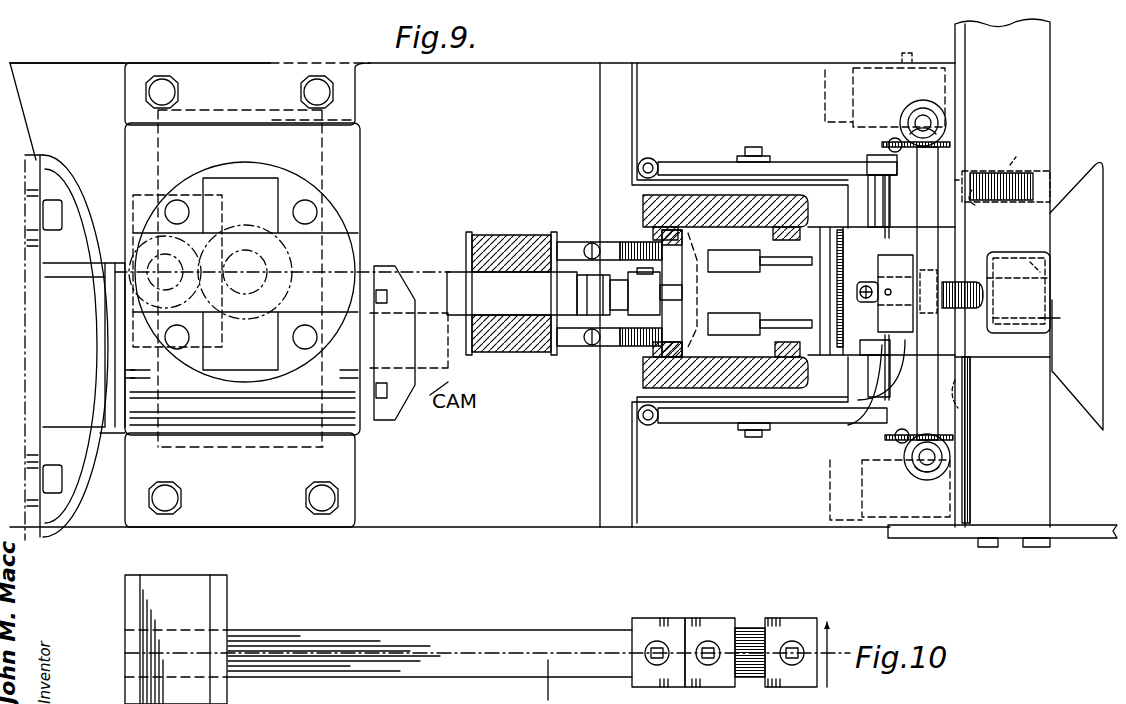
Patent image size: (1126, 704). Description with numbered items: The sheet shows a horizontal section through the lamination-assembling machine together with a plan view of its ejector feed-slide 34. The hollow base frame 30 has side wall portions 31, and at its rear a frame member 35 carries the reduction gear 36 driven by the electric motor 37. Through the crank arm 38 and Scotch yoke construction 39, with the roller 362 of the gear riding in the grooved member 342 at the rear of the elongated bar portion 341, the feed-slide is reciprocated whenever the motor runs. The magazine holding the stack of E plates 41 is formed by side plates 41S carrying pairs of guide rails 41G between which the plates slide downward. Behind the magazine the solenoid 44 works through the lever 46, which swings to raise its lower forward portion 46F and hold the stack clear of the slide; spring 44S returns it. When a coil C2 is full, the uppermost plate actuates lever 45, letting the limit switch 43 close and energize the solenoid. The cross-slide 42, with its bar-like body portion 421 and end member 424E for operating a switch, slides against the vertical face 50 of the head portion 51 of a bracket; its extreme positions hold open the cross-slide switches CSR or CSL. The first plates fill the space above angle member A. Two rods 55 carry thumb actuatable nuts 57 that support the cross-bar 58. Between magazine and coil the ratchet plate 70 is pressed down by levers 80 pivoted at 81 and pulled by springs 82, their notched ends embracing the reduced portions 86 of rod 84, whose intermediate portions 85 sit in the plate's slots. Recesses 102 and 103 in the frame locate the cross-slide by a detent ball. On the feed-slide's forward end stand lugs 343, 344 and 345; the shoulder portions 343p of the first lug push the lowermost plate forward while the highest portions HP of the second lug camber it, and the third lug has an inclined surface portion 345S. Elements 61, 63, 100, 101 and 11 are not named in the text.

In FIG. 9, the base frame 30 is at (122, 64).
In FIG. 9, the side wall portions 31 is at (362, 63).
In FIG. 9, the E plate ejector feed-slide 34 is at (398, 266).
In FIG. 10, the E plate ejector feed-slide 34 is at (513, 605).
In FIG. 9, the frame member 35 is at (482, 186).
In FIG. 9, the reduction gear 36 is at (336, 250).
In FIG. 9, the electric motor 37 is at (70, 168).
In FIG. 9, the crank arm 38 is at (208, 240).
In FIG. 9, the Scotch yoke construction 39 is at (125, 330).
In FIG. 9, the roller 362 is at (125, 292).
In FIG. 9, the E plates 41 is at (762, 300).
In FIG. 9, the side plates 41S is at (675, 195).
In FIG. 9, the guide rails 41G is at (770, 240).
In FIG. 9, the cross-slide 42 is at (1052, 154).
In FIG. 9, the electric switch 43 is at (878, 268).
In FIG. 9, the solenoid 44 is at (516, 240).
In FIG. 9, the spring 44S is at (610, 248).
In FIG. 9, the lever 45 is at (950, 280).
In FIG. 9, the lever 46 is at (660, 245).
In FIG. 9, the lower forward portion 46F is at (705, 290).
In FIG. 9, the vertical face 50 is at (1045, 268).
In FIG. 9, the head portion 51 is at (1085, 364).
In FIG. 9, the rods 55 is at (926, 115).
In FIG. 9, the thumb actuatable nuts 57 is at (925, 122).
In FIG. 9, the cross-bar 58 is at (960, 425).
In FIG. 9, the small roller 61 is at (893, 138).
In FIG. 9, the roller flange 63 is at (932, 148).
In FIG. 9, the ratchet plate 70 is at (946, 322).
In FIG. 9, the lever 80 is at (826, 158).
In FIG. 9, the horizontal pivot 81 is at (758, 147).
In FIG. 9, the spring 82 is at (650, 158).
In FIG. 9, the rod 84 is at (872, 155).
In FIG. 9, the intermediate portions 85 is at (888, 240).
In FIG. 9, the reduced portions 86 is at (898, 170).
In FIG. 9, the spring 100 is at (1006, 176).
In FIG. 9, the spring end 101 is at (1026, 149).
In FIG. 9, the recess 102 is at (988, 169).
In FIG. 9, the recess 103 is at (974, 394).
In FIG. 9, the bar-like body portion 421 is at (1032, 431).
In FIG. 9, the switch-operating member 424E is at (1002, 552).
In FIG. 10, the bar portion 341 is at (512, 664).
In FIG. 10, the grooved member 342 is at (226, 598).
In FIG. 10, the lug 343 is at (645, 612).
In FIG. 10, the shoulder portions 343p is at (690, 618).
In FIG. 10, the lug 344 is at (742, 615).
In FIG. 10, the lug 345 is at (800, 615).
In FIG. 10, the inclined surface portion 345S is at (872, 700).
In FIG. 9, the cross-slide switch CSR is at (825, 86).
In FIG. 9, the cross-slide switch CSL is at (830, 492).
In FIG. 9, the angle member A is at (1052, 285).
In FIG. 9, the coil C2 is at (1059, 327).
In FIG. 10, the highest portions HP is at (705, 697).
In FIG. 10, the arrow 11 is at (839, 663).